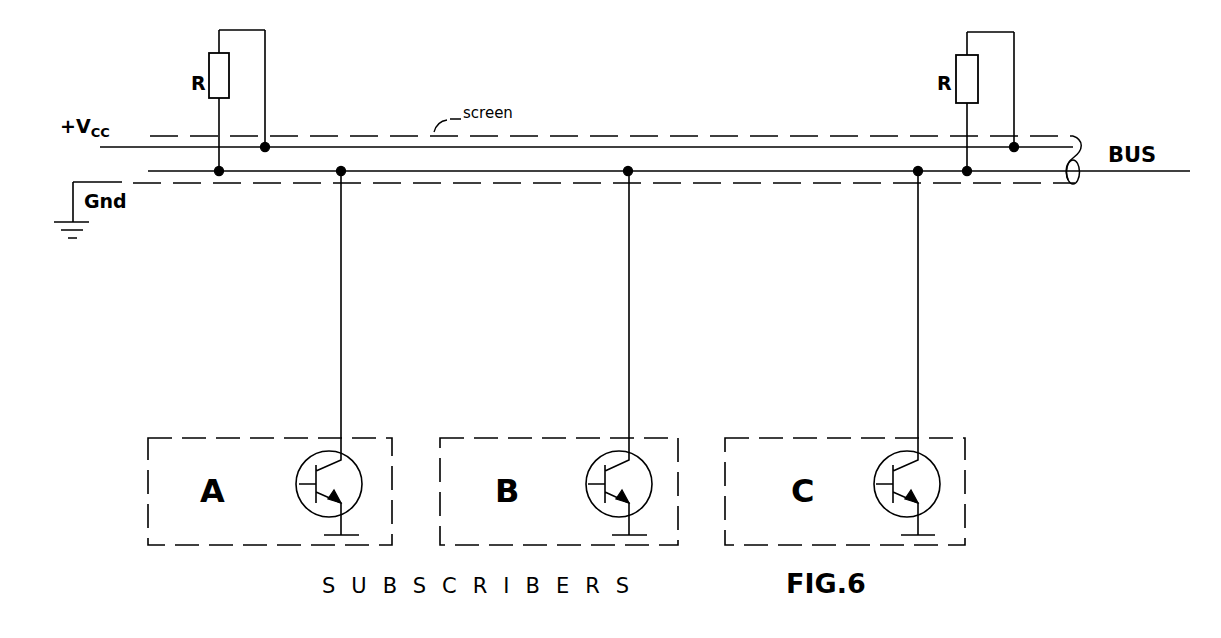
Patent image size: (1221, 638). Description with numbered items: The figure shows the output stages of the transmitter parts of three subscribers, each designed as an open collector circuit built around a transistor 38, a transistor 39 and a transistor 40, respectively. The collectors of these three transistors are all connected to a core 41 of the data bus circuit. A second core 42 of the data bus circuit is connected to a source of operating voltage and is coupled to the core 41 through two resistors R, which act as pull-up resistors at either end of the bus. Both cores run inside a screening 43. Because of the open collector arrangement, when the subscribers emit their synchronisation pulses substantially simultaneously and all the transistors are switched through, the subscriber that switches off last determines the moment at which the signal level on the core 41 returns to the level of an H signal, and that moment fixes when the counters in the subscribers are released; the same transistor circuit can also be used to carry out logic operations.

The transistor 38 is at (303, 474).
The transistor 39 is at (590, 474).
The transistor 40 is at (874, 480).
The core 41 is at (745, 172).
The second core 42 is at (738, 146).
The screening 43 is at (653, 135).